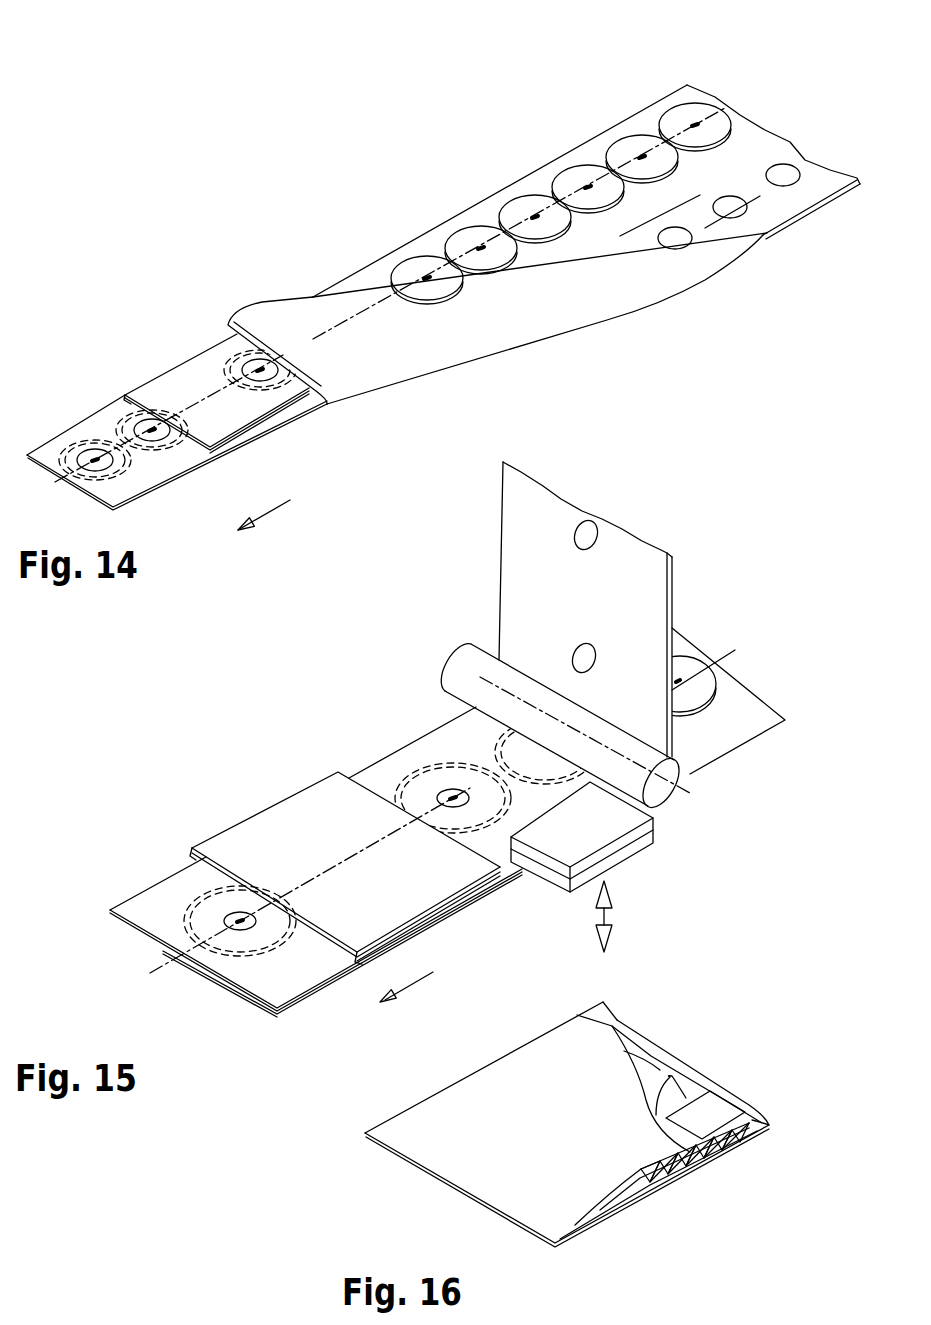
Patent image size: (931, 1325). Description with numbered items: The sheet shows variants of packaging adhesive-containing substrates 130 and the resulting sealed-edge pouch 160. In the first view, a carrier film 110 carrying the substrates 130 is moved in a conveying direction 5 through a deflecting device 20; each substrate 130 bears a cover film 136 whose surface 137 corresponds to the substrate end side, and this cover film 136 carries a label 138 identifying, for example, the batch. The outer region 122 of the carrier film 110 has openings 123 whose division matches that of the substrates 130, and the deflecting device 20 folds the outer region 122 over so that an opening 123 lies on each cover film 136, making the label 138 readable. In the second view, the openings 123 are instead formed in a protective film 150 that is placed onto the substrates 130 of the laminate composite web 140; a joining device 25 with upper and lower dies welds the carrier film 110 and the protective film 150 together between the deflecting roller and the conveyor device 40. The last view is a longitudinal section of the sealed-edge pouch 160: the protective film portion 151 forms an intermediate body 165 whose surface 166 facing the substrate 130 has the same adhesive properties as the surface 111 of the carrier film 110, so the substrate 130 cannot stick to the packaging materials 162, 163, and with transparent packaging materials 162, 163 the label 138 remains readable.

In FIG. 14, the conveying direction 5 is at (263, 513).
In FIG. 14, the deflecting device 20 is at (345, 308).
In FIG. 15, the joining device 25 is at (672, 851).
In FIG. 14, the conveyor device 40 is at (185, 372).
In FIG. 15, the conveyor device 40 is at (240, 848).
In FIG. 14, the carrier film 110 is at (445, 232).
In FIG. 14, the surface of the carrier film 111 is at (728, 230).
In FIG. 14, the outer region 122 is at (622, 240).
In FIG. 14, the openings 123 is at (97, 444).
In FIG. 15, the openings 123 is at (453, 797).
In FIG. 15, the substrate 130 is at (547, 758).
In FIG. 16, the substrate 130 is at (729, 1143).
In FIG. 16, the cover film 136 is at (742, 1123).
In FIG. 14, the surface of the cover film 137 is at (693, 112).
In FIG. 16, the surface of the cover film 137 is at (685, 1091).
In FIG. 14, the label 138 is at (148, 428).
In FIG. 15, the label 138 is at (437, 792).
In FIG. 16, the label 138 is at (722, 1111).
In FIG. 14, the laminate composite web 140 is at (528, 140).
In FIG. 15, the protective film 150 is at (671, 580).
In FIG. 16, the protective film portion 151 is at (648, 1073).
In FIG. 16, the sealed-edge pouch 160 is at (390, 1171).
In FIG. 16, the packaging material 162 is at (604, 1015).
In FIG. 16, the packaging material 163 is at (457, 1133).
In FIG. 16, the intermediate body 165 is at (658, 1191).
In FIG. 16, the surface of the intermediate body 166 is at (627, 1044).